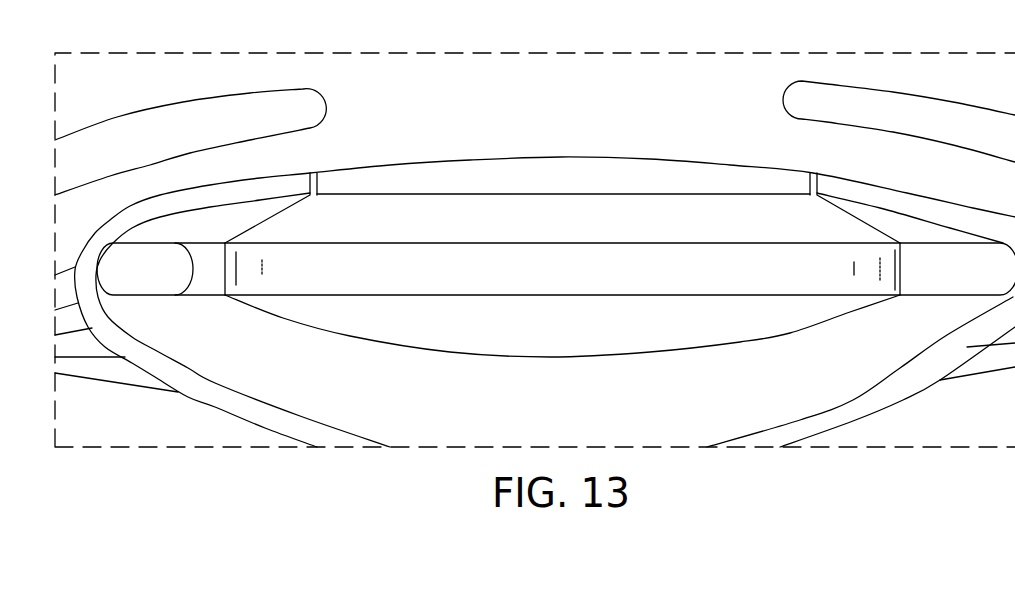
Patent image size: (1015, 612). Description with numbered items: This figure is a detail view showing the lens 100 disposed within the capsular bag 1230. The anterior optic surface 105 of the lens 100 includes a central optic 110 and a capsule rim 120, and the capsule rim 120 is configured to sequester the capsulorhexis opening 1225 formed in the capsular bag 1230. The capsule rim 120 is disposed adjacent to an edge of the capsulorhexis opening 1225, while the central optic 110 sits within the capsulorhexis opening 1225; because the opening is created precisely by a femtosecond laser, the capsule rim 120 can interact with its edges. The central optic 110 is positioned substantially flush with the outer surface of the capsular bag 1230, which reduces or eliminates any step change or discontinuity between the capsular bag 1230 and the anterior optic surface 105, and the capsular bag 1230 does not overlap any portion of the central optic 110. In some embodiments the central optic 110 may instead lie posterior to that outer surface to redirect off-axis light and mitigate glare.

The lens 100 is at (675, 365).
The anterior optic surface 105 is at (523, 135).
The central optic 110 is at (598, 157).
The capsule rim 120 is at (317, 186).
The capsulorhexis opening 1225 is at (810, 180).
The capsular bag 1230 is at (853, 423).